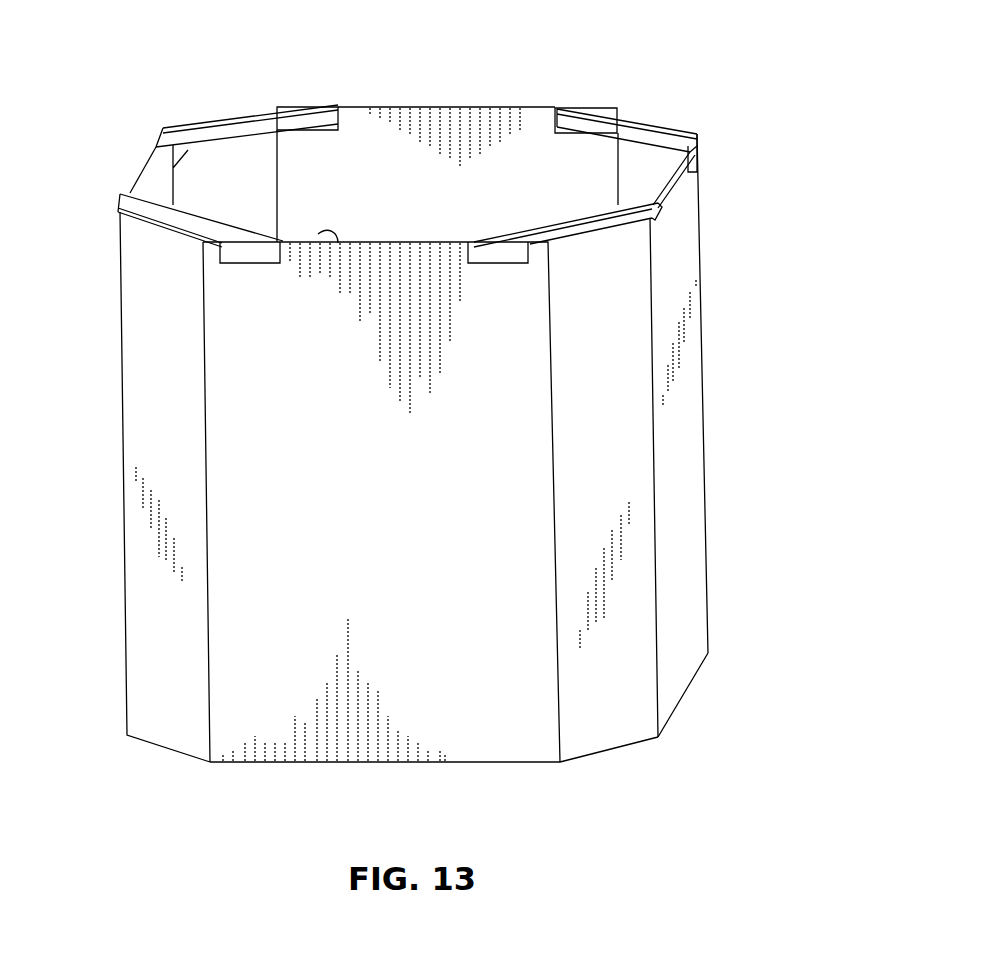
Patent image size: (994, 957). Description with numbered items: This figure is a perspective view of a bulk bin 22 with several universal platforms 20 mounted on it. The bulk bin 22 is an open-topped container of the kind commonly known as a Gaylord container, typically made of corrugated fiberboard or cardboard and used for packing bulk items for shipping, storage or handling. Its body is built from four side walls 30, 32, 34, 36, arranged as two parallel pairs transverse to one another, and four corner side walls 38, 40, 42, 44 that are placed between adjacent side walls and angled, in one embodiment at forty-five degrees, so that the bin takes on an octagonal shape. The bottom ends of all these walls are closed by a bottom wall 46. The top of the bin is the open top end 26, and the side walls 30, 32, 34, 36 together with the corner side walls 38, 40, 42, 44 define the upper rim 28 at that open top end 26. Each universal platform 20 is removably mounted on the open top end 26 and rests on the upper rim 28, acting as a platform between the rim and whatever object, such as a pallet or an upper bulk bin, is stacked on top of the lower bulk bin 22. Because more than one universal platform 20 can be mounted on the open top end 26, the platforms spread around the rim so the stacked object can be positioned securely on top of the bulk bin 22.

The universal platform 20 is at (192, 128).
The bulk bin 22 is at (676, 395).
The open top end 26 is at (488, 148).
The upper rim 28 is at (318, 234).
The side wall 30 is at (157, 183).
The side wall 32 is at (390, 522).
The side wall 34 is at (668, 522).
The side wall 36 is at (390, 189).
The corner side wall 38 is at (145, 394).
The corner side wall 40 is at (585, 394).
The corner side wall 42 is at (648, 168).
The corner side wall 44 is at (213, 189).
The bottom wall 46 is at (450, 762).